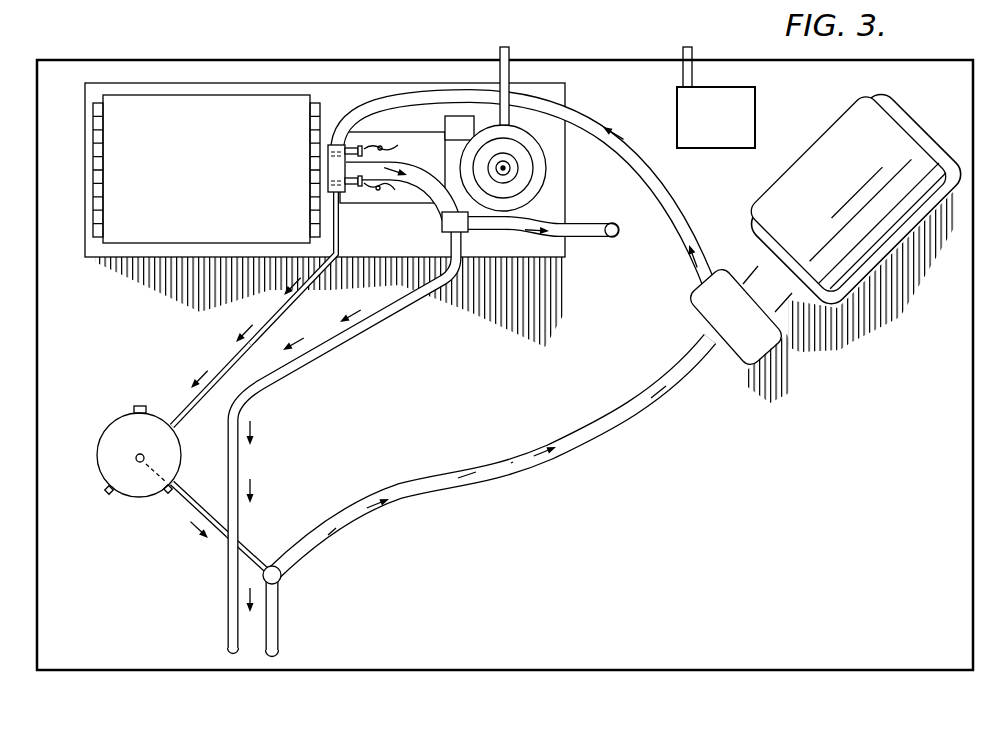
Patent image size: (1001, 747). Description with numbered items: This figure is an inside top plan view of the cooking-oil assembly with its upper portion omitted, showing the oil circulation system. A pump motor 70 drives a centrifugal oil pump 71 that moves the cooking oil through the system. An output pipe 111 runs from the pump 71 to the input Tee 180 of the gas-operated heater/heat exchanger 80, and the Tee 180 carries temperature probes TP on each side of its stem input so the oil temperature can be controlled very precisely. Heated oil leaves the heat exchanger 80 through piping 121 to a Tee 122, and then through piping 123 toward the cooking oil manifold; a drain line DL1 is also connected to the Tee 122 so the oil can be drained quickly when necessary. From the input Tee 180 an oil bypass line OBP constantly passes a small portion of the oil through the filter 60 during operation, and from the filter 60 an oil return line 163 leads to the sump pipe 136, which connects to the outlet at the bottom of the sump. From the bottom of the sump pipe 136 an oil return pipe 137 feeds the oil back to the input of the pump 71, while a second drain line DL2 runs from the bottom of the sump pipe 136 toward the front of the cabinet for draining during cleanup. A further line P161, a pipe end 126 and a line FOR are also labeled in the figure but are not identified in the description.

The heater/heat exchanger 80 is at (218, 166).
The input Tee 180 is at (329, 167).
The temperature probes TP is at (353, 185).
The output pipe 111 is at (680, 243).
The piping 121 is at (418, 206).
The piping 123 is at (587, 222).
The nozzle end 126 is at (613, 228).
The Tee 122 is at (486, 230).
The oil bypass line OBP is at (268, 326).
The pipe P161 is at (226, 366).
The filter 60 is at (118, 426).
The oil return line 163 is at (178, 498).
The fuel oil return line FOR is at (248, 549).
The drain line DL1 is at (232, 622).
The drain line DL2 is at (281, 631).
The sump pipe 136 is at (283, 583).
The oil return pipe 137 is at (472, 461).
The pump motor 70 is at (845, 190).
The centrifugal oil pump 71 is at (742, 328).